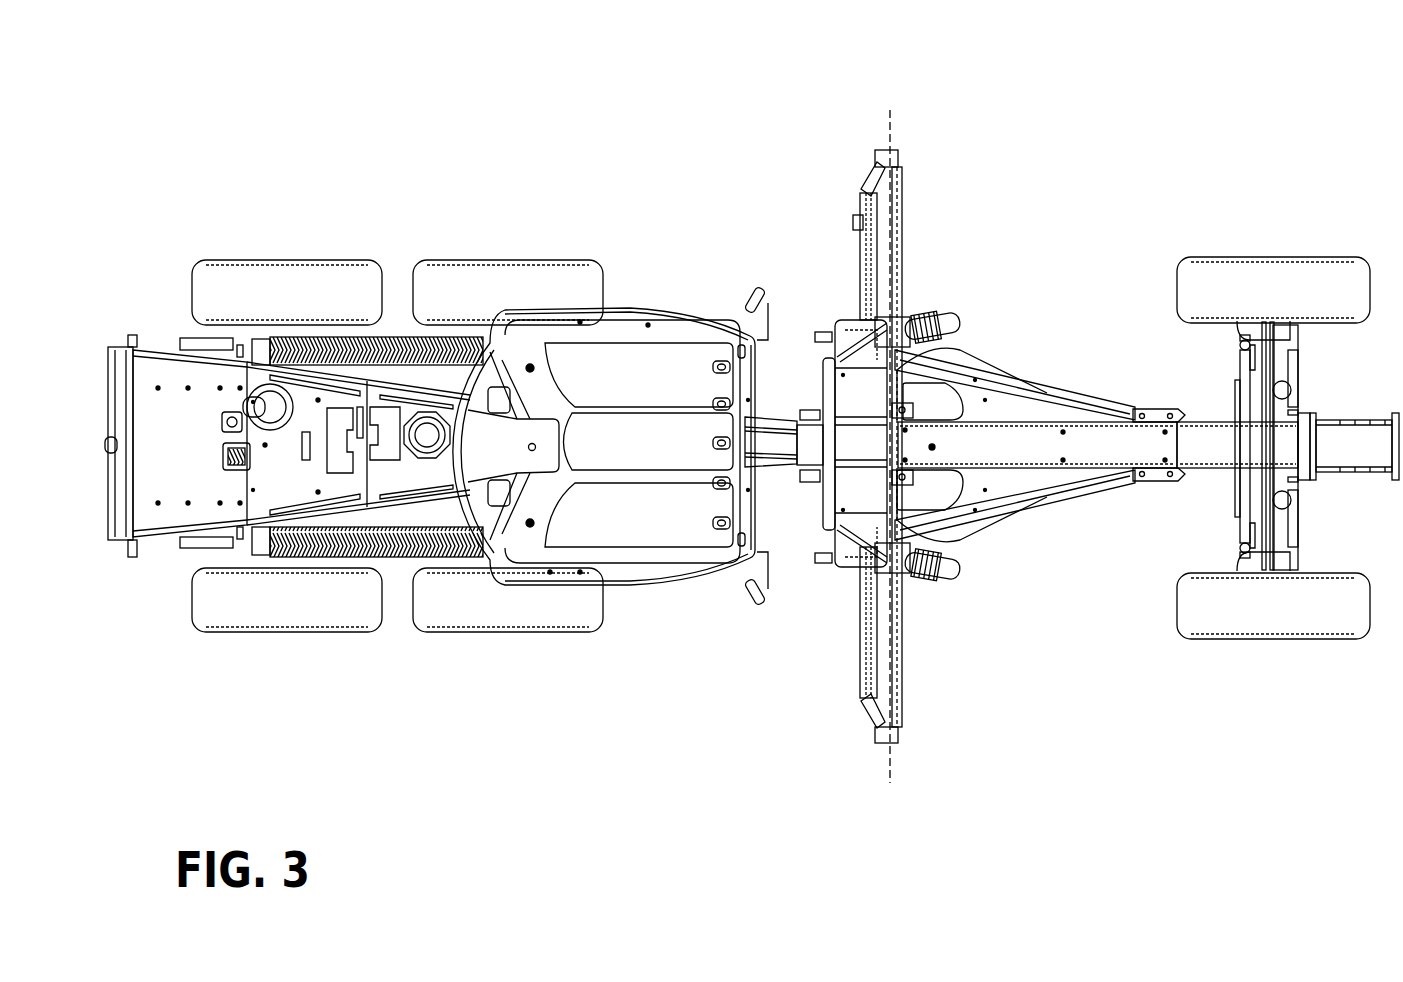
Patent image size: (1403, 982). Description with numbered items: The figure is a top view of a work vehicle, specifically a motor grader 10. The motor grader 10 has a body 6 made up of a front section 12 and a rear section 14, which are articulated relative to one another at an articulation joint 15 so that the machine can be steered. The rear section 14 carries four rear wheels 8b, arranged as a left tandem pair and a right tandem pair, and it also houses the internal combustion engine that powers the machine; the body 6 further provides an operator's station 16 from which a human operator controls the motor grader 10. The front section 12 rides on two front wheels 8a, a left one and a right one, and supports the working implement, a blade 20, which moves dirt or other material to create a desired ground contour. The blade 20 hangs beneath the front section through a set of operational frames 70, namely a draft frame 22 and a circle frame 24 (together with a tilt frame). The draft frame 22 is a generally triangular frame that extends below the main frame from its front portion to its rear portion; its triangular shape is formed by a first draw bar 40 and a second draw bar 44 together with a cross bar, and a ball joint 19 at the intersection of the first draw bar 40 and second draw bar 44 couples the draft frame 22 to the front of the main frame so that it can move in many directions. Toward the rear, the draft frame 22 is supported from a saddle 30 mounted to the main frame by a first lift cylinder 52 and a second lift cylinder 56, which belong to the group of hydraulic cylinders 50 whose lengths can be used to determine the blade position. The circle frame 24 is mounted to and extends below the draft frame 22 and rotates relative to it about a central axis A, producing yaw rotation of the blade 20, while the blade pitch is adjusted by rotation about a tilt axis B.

The motor grader 10 is at (617, 138).
The front section 12 is at (1374, 250).
The rear section 14 is at (157, 283).
The front wheels 8a is at (1273, 262).
The rear wheels 8b is at (303, 262).
The body 6 is at (725, 298).
The operator's station 16 is at (645, 363).
The articulation joint 15 is at (787, 411).
The saddle 30 is at (860, 367).
The blade 20 is at (935, 432).
The operational frames 70 is at (1017, 432).
The circle frame 24 is at (977, 373).
The draft frame 22 is at (1110, 416).
The second draw bar 44 is at (1047, 402).
The first draw bar 40 is at (1047, 495).
The ball joint 19 is at (1127, 489).
The cylinders 50 is at (957, 445).
The second lift cylinder 56 is at (953, 320).
The first lift cylinder 52 is at (953, 578).
The central axis A is at (932, 447).
The tilt axis B is at (890, 757).